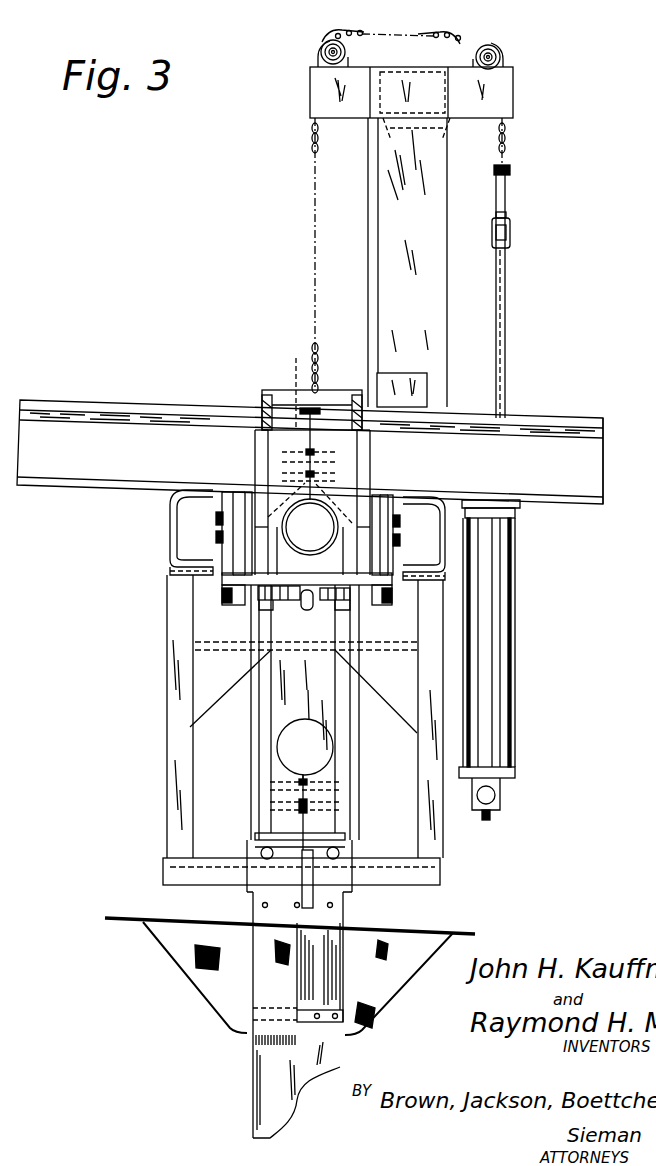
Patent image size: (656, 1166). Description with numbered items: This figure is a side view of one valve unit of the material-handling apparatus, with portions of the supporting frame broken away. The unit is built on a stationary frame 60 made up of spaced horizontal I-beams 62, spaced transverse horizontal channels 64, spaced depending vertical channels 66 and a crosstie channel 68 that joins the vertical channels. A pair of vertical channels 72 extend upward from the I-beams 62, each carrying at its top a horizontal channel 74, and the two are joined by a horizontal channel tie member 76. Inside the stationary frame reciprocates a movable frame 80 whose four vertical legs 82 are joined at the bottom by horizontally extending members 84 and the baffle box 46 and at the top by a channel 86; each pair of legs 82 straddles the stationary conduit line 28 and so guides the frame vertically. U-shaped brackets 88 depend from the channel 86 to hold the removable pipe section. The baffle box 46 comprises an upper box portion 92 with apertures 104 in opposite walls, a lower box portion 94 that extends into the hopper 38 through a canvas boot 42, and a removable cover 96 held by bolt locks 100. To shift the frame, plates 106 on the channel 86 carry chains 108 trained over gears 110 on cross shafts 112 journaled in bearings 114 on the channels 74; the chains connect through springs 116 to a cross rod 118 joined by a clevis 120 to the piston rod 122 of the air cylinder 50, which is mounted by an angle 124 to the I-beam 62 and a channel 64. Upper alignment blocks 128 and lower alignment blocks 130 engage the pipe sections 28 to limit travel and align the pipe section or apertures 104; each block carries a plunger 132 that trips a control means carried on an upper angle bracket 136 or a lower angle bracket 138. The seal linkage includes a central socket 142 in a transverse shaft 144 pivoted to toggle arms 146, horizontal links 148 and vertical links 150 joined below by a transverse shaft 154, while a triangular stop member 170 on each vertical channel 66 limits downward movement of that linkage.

The conduit line 28 is at (310, 527).
The hopper 38 is at (105, 918).
The boot 42 is at (192, 988).
The baffle box 46 is at (360, 766).
The air cylinder 50 is at (516, 645).
The stationary frame 60 is at (541, 416).
The horizontal I-beams 62 is at (604, 461).
The transverse horizontal channels 64 is at (171, 522).
The depending vertical channels 66 is at (167, 750).
The crosstie channel 68 is at (441, 879).
The vertical channels 72 is at (448, 268).
The horizontal channel 74 is at (512, 92).
The horizontal channel tie member 76 is at (376, 130).
The movable frame 80 is at (255, 405).
The vertical legs 82 is at (360, 641).
The horizontally extending members 84 is at (346, 838).
The channel 86 is at (282, 392).
The U-shaped brackets 88 is at (330, 532).
The upper box portion 92 is at (352, 782).
The lower box portion 94 is at (341, 976).
The removable cover 96 is at (352, 615).
The bolt locks 100 is at (333, 625).
The apertures 104 is at (305, 747).
The plates 106 is at (333, 396).
The chains 108 is at (311, 135).
The gears 110 is at (470, 55).
The cross shafts 112 is at (323, 42).
The bearings 114 is at (321, 52).
The springs 116 is at (511, 170).
The cross shaft or rod 118 is at (511, 230).
The clevis 120 is at (511, 243).
The piston rod 122 is at (506, 303).
The angle 124 is at (522, 508).
The alignment blocks 128 is at (285, 446).
The alignment blocks 130 is at (332, 799).
The plunger 132 is at (316, 487).
The angle bracket 136 is at (296, 360).
The angle bracket 138 is at (335, 901).
The central socket 142 is at (303, 612).
The transverse shaft 144 is at (246, 605).
The toggle arms 146 is at (236, 557).
The horizontally extending links 148 is at (218, 524).
The vertically extending links 150 is at (235, 506).
The transverse shaft 154 is at (248, 619).
The stop member 170 is at (202, 714).